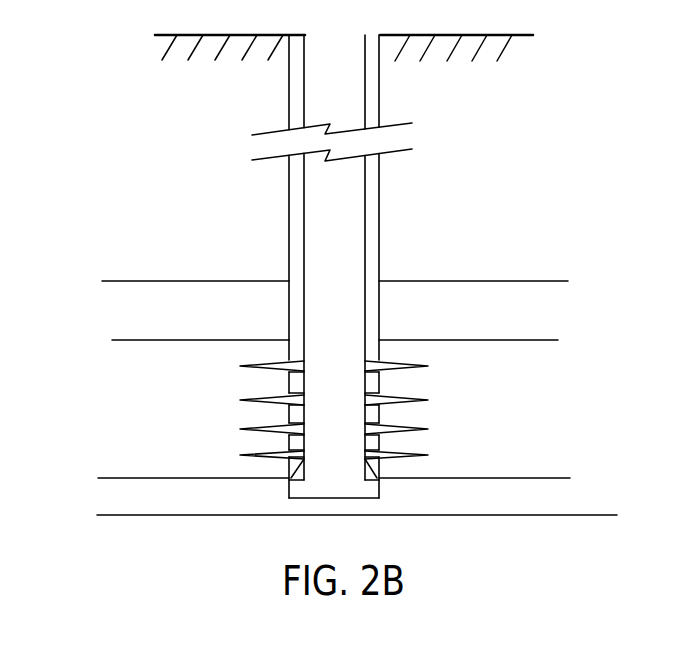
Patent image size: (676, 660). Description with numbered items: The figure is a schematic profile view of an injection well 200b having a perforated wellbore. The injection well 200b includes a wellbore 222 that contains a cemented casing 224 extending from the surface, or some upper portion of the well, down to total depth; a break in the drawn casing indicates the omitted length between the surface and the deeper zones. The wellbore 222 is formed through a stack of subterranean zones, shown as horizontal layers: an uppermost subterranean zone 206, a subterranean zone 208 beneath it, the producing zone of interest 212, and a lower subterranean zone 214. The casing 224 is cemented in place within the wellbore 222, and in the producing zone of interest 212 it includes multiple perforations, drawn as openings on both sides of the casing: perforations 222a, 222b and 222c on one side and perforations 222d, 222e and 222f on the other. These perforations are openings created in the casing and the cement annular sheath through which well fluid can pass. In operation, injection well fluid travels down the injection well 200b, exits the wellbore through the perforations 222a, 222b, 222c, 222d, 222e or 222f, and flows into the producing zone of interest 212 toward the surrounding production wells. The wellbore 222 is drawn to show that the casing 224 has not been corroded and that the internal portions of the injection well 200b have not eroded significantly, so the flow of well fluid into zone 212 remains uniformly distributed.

The injection well 200b is at (99, 103).
The subterranean zone 206 is at (548, 173).
The subterranean zone 208 is at (539, 321).
The producing zone of interest 212 is at (573, 416).
The subterranean zone 214 is at (553, 509).
The wellbore 222 is at (380, 78).
The cemented casing 224 is at (365, 178).
The perforation 222a is at (275, 366).
The perforation 222b is at (292, 396).
The perforation 222c is at (295, 456).
The perforation 222d is at (383, 369).
The perforation 222e is at (383, 402).
The perforation 222f is at (383, 455).